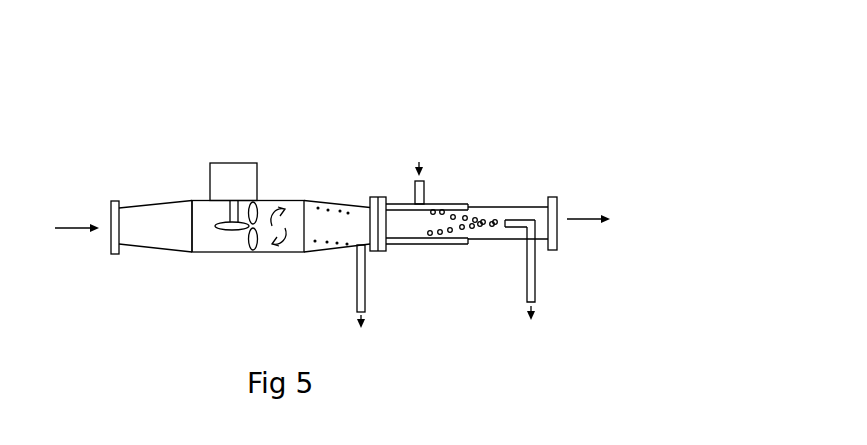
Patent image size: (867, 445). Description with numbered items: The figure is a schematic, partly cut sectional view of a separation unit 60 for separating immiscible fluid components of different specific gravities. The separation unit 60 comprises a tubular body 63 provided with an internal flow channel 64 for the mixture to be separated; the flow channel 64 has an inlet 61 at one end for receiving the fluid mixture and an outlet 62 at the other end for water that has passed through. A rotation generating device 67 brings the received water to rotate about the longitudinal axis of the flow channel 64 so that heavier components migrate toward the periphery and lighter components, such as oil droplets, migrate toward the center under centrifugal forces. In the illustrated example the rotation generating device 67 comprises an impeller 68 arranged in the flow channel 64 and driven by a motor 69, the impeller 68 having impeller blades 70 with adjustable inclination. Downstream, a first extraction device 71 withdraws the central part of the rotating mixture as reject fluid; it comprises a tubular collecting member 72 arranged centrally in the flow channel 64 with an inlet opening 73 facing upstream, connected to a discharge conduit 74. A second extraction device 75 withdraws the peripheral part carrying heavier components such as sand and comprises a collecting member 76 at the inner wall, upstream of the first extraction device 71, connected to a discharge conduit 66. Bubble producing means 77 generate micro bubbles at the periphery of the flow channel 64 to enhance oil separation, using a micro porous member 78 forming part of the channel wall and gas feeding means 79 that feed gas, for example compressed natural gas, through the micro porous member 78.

The separation unit 60 is at (128, 141).
The inlet 61 is at (112, 243).
The outlet 62 is at (558, 203).
The tubular body 63 is at (163, 200).
The flow channel 64 is at (213, 243).
The discharge conduit 66 is at (365, 290).
The rotation generating device 67 is at (268, 185).
The impeller 68 is at (240, 250).
The motor 69 is at (240, 168).
The impeller blades 70 is at (250, 245).
The first extraction device 71 is at (544, 257).
The tubular collecting member 72 is at (520, 219).
The inlet opening 73 is at (497, 242).
The discharge conduit 74 is at (533, 280).
The second extraction device 75 is at (334, 258).
The collecting member 76 is at (364, 205).
The bubble producing means 77 is at (400, 190).
The micro porous member 78 is at (400, 244).
The gas feeding means 79 is at (425, 185).